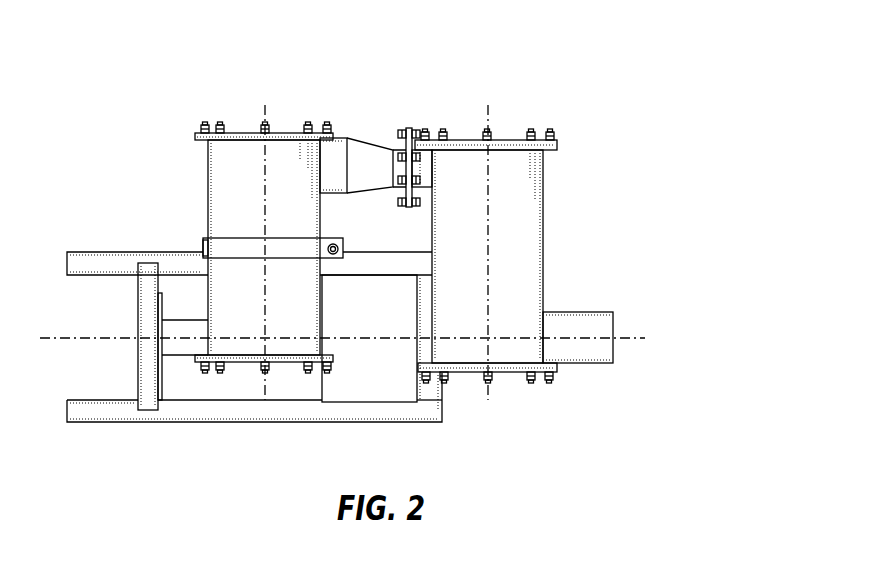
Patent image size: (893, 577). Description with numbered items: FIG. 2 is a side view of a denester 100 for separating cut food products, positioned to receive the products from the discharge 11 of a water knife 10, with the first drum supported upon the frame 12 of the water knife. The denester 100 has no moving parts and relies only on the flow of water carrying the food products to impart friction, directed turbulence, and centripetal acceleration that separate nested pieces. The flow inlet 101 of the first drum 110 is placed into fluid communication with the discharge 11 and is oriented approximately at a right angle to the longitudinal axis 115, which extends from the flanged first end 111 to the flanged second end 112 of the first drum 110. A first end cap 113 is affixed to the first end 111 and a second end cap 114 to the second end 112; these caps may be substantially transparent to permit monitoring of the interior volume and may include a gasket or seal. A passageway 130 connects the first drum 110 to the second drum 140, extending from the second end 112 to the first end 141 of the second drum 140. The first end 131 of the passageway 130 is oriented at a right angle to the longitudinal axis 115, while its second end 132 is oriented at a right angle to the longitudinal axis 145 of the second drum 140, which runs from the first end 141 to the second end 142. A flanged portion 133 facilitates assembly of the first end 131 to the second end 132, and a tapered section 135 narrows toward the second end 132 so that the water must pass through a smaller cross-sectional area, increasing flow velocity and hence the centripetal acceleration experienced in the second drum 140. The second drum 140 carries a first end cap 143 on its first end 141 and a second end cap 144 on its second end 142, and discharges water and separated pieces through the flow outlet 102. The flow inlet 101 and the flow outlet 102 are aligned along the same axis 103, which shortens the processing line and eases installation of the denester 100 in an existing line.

The denester 100 is at (641, 48).
The water knife 10 is at (145, 275).
The discharge 11 is at (160, 340).
The frame 12 is at (275, 425).
The flow inlet 101 is at (197, 343).
The flow outlet 102 is at (610, 312).
The axis 103 is at (628, 338).
The first drum 110 is at (210, 185).
The first end 111 is at (325, 345).
The second end 112 is at (195, 136).
The first end cap 113 is at (247, 363).
The second end cap 114 is at (235, 127).
The longitudinal axis 115 is at (265, 125).
The passageway 130 is at (406, 150).
The first end 131 is at (333, 148).
The second end 132 is at (435, 150).
The flanged portion 133 is at (412, 130).
The tapered section 135 is at (375, 180).
The second drum 140 is at (533, 240).
The first end 141 is at (560, 150).
The second end 142 is at (478, 363).
The first end cap 143 is at (510, 140).
The second end cap 144 is at (505, 368).
The longitudinal axis 145 is at (488, 390).